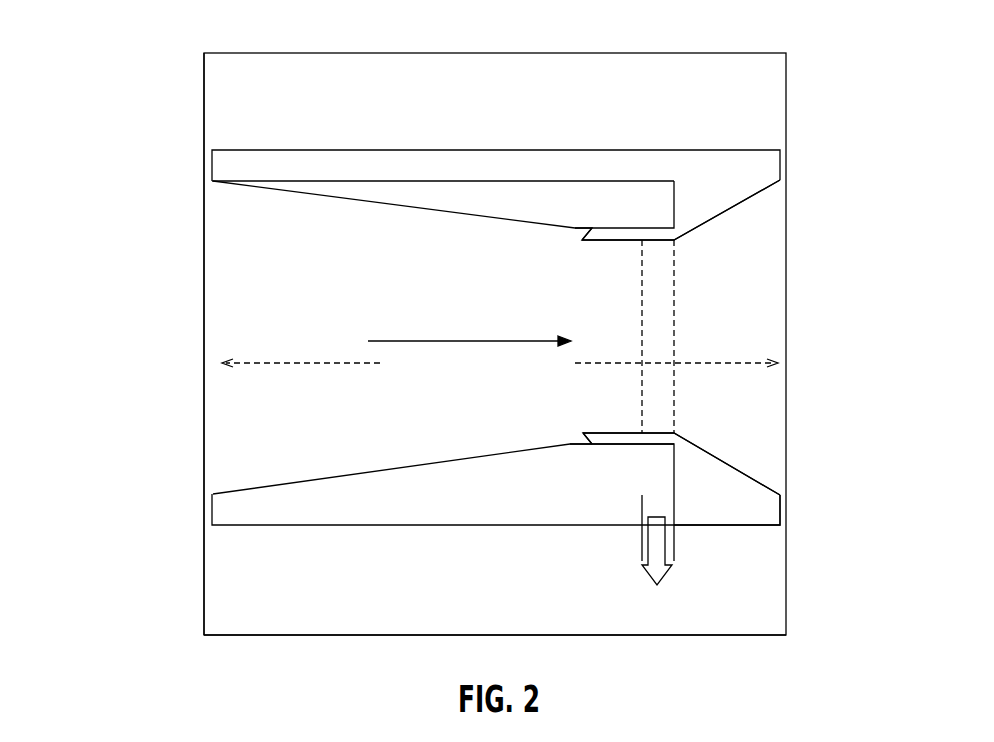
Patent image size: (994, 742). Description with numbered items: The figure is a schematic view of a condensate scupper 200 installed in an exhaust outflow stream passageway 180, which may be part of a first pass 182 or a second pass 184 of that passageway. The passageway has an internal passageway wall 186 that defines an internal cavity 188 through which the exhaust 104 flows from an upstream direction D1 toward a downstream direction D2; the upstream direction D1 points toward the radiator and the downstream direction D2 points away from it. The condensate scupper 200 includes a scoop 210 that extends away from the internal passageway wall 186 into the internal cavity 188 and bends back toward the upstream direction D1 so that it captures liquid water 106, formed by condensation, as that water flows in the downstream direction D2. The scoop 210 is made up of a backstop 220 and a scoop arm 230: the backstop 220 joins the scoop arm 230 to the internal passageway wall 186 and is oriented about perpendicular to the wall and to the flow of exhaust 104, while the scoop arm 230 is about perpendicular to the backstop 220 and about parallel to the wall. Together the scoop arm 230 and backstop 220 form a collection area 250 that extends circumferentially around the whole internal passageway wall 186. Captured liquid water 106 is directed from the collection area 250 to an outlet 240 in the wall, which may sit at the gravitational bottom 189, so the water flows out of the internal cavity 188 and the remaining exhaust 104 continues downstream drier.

The condensate scupper 200 is at (82, 86).
The exhaust outflow stream passageway 180 is at (242, 158).
The first pass 182 is at (233, 256).
The second pass 184 is at (233, 256).
The internal passageway wall 186 is at (321, 180).
The internal cavity 188 is at (378, 254).
The gravitational bottom 189 is at (630, 496).
The liquid water 106 is at (533, 190).
The exhaust 104 is at (450, 340).
The scoop 210 is at (613, 232).
The backstop 220 is at (674, 203).
The scoop arm 230 is at (585, 241).
The outlet 240 is at (667, 507).
The collection area 250 is at (647, 219).
The upstream direction D1 is at (270, 362).
The downstream direction D2 is at (735, 364).